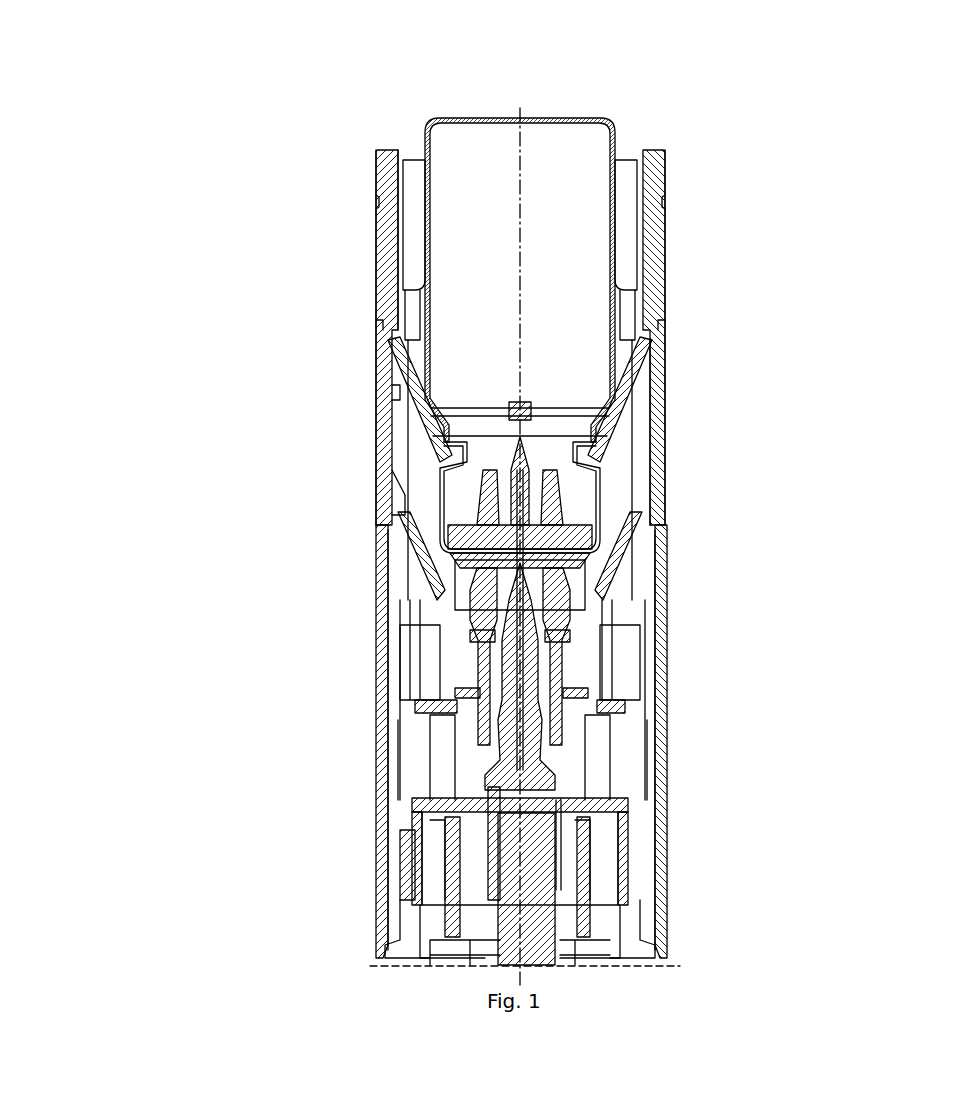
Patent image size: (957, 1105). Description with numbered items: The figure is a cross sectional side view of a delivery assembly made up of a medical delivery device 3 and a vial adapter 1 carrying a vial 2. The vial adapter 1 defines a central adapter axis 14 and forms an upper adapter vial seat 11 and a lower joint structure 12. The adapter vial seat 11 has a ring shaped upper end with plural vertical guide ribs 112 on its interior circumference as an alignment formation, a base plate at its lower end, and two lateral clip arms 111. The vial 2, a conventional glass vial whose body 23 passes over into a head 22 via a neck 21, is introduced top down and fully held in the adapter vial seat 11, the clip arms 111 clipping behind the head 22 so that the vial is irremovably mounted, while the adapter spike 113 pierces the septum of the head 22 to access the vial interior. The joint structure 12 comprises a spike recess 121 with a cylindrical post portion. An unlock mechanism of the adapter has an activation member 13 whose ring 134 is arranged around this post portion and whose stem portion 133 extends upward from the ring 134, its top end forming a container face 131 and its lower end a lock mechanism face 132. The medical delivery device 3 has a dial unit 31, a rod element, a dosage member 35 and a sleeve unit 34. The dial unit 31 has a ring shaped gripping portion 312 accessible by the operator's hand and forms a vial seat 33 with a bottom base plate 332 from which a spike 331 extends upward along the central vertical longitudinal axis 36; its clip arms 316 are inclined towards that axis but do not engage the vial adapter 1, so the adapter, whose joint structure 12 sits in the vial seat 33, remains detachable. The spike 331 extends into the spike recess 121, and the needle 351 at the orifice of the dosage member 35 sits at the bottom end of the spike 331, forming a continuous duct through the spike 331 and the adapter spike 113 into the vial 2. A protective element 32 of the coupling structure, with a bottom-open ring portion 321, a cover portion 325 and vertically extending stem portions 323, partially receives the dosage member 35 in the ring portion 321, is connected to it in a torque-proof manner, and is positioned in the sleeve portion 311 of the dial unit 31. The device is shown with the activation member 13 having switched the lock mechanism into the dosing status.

The vial adapter 1 is at (360, 195).
The adapter vial seat 11 is at (410, 232).
The clip arms 111 is at (417, 393).
The vertical guide ribs 112 is at (418, 173).
The adapter spike 113 is at (512, 460).
The joint structure 12 is at (583, 625).
The spike recess 121 is at (597, 672).
The activation member 13 is at (602, 612).
The container face 131 is at (593, 537).
The lock mechanism face 132 is at (583, 702).
The stem portion 133 is at (623, 628).
The ring 134 is at (448, 698).
The central adapter axis 14 is at (520, 261).
The vial 2 is at (543, 110).
The neck 21 is at (560, 452).
The head 22 is at (593, 498).
The body 23 is at (490, 152).
The medical delivery device 3 is at (338, 636).
The dial unit 31 is at (684, 361).
The sleeve portion 311 is at (397, 787).
The gripping portion 312 is at (658, 450).
The clip arms 316 is at (427, 560).
The protective element 32 is at (637, 855).
The ring portion 321 is at (592, 707).
The stem portions 323 is at (587, 758).
The cover portion 325 is at (615, 805).
The vial seat 33 is at (411, 492).
The spike 331 is at (487, 648).
The bottom base plate 332 is at (430, 722).
The sleeve unit 34 is at (380, 882).
The dosage member 35 is at (563, 918).
The needle 351 is at (505, 866).
The central vertical longitudinal axis 36 is at (500, 922).